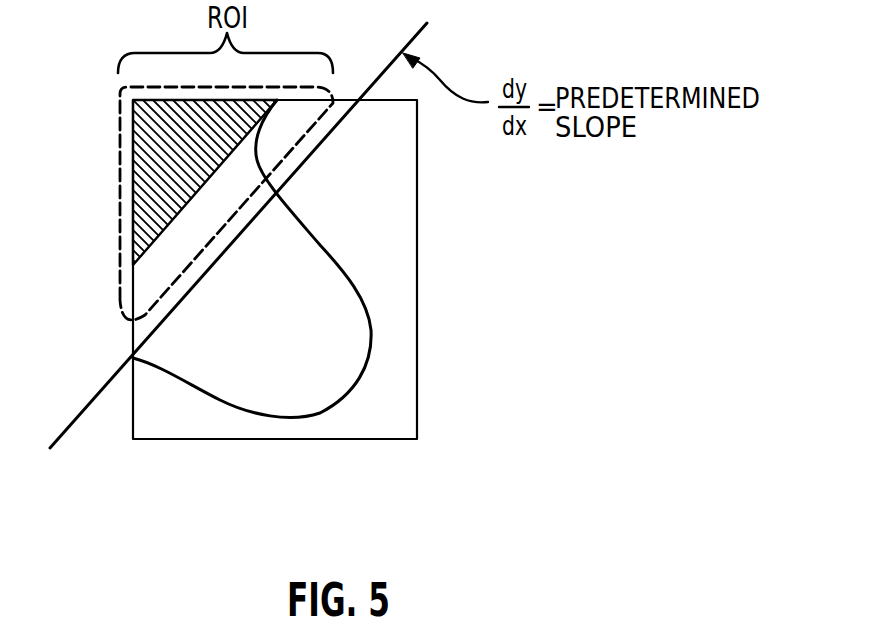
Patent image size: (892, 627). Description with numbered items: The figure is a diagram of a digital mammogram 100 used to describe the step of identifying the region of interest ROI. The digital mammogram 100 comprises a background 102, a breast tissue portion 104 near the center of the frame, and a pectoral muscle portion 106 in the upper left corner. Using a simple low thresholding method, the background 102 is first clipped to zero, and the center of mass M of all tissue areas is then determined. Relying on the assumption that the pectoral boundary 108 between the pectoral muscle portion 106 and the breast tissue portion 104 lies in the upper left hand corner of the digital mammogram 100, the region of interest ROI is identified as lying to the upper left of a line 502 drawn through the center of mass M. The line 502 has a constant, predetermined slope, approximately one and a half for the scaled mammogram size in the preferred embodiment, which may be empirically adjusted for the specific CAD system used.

The digital mammogram 100 is at (417, 225).
The background 102 is at (380, 402).
The breast tissue portion 104 is at (350, 320).
The pectoral muscle portion 106 is at (133, 143).
The pectoral boundary 108 is at (148, 246).
The line 502 is at (70, 425).